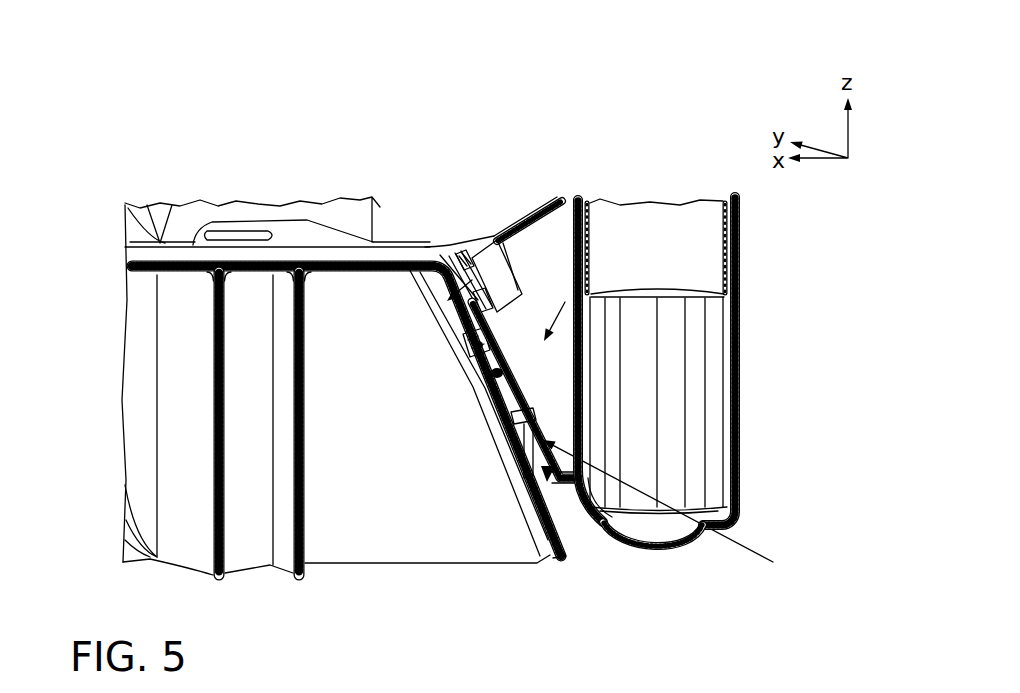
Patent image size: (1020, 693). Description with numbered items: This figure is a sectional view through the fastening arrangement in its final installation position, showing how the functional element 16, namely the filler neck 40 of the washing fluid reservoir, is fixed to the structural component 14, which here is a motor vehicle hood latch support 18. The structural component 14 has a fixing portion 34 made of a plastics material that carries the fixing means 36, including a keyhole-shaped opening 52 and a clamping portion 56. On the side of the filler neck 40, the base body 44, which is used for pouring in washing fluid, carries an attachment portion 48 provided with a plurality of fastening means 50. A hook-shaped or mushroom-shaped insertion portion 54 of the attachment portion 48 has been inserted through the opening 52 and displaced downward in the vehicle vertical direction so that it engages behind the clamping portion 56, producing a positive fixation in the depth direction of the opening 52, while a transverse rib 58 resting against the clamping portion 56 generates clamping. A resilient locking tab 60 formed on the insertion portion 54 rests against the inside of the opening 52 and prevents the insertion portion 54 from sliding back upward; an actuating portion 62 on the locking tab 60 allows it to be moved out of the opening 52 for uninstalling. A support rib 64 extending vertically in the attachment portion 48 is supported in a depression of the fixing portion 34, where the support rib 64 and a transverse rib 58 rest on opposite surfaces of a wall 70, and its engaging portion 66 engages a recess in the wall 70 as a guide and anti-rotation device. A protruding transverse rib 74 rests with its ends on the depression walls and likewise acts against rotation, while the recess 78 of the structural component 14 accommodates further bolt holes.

The structural component 14 is at (252, 197).
The motor vehicle hood latch support 18 is at (291, 230).
The functional element 16 is at (734, 371).
The filler neck 40 is at (755, 311).
The fixing portion 34 is at (483, 474).
The fixing means 36 is at (346, 354).
The keyhole-shaped opening 52 is at (436, 258).
The clamping portion 56 is at (478, 355).
The base body 44 is at (695, 378).
The attachment portion 48 is at (593, 295).
The fastening means 50 is at (495, 211).
The insertion portion 54 is at (472, 338).
The resilient locking tab 60 is at (474, 285).
The support rib 64 is at (520, 447).
The engaging portion 66 is at (550, 483).
The transverse rib 74 is at (522, 418).
The transverse rib 58 is at (518, 269).
The actuating portion 62 is at (458, 256).
The wall 70 is at (550, 462).
The recess 78 is at (673, 514).